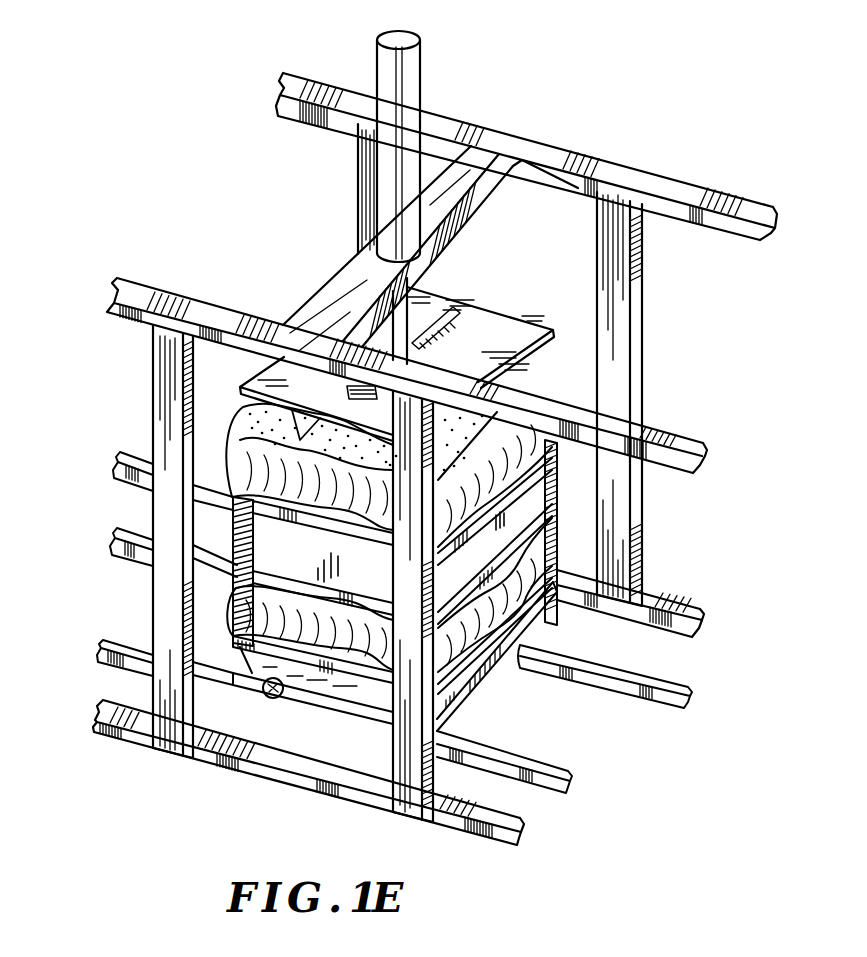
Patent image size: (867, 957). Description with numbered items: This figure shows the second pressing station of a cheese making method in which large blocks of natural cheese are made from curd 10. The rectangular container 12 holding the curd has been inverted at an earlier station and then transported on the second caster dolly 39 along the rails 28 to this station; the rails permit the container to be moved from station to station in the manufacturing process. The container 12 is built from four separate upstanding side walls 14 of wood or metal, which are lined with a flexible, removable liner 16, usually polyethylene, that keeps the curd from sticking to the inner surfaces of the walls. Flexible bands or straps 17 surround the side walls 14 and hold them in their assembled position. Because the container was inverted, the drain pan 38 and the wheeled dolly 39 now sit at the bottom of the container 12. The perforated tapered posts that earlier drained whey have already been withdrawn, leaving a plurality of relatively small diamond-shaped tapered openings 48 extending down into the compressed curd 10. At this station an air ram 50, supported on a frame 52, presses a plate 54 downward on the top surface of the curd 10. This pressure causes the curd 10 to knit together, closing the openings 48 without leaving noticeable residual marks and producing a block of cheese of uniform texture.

The curd 10 is at (387, 462).
The rectangular container 12 is at (570, 476).
The side walls 14 is at (508, 552).
The flexible removable liner 16 is at (236, 597).
The flexible bands or straps 17 is at (376, 603).
The rails 28 is at (103, 644).
The drain pan 38 is at (236, 633).
The second caster dolly 39 is at (477, 689).
The diamond-shaped tapered openings 48 is at (318, 436).
The air ram 50 is at (421, 74).
The frame 52 is at (576, 152).
The plate 54 is at (493, 310).